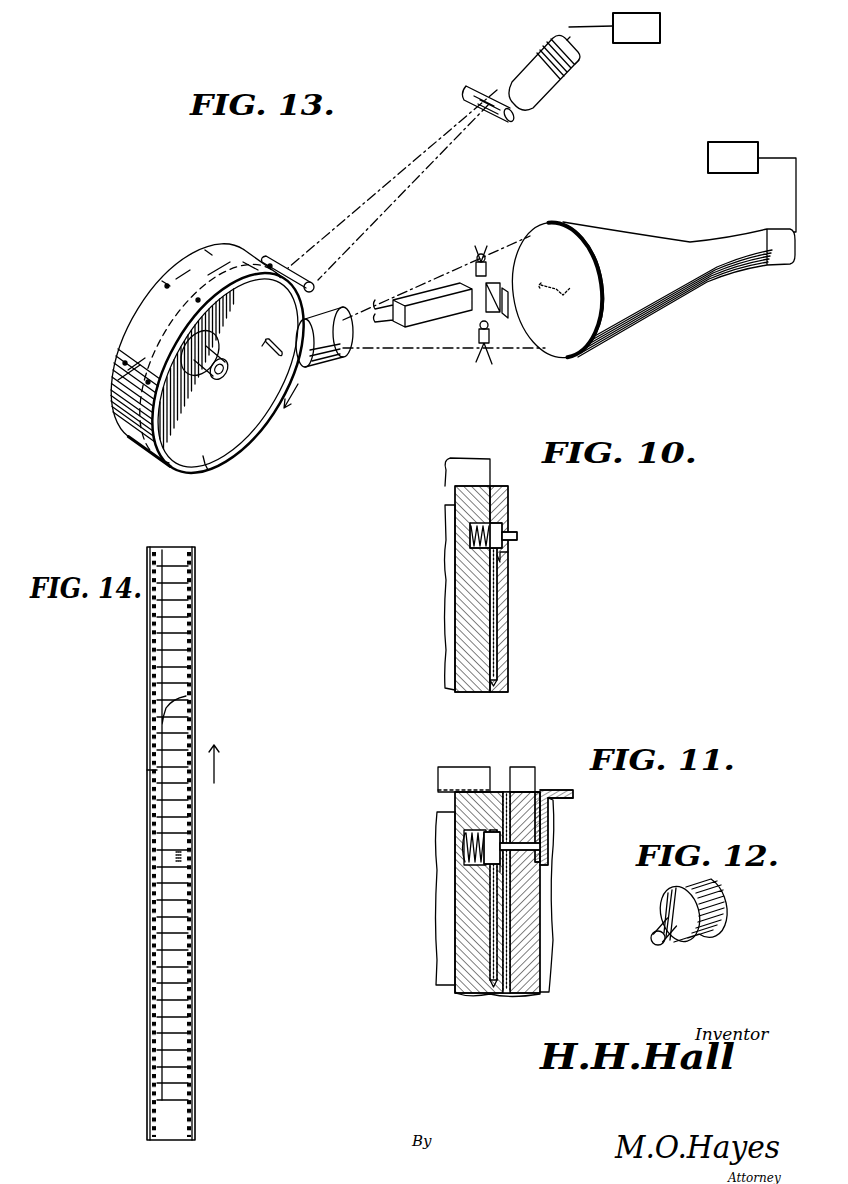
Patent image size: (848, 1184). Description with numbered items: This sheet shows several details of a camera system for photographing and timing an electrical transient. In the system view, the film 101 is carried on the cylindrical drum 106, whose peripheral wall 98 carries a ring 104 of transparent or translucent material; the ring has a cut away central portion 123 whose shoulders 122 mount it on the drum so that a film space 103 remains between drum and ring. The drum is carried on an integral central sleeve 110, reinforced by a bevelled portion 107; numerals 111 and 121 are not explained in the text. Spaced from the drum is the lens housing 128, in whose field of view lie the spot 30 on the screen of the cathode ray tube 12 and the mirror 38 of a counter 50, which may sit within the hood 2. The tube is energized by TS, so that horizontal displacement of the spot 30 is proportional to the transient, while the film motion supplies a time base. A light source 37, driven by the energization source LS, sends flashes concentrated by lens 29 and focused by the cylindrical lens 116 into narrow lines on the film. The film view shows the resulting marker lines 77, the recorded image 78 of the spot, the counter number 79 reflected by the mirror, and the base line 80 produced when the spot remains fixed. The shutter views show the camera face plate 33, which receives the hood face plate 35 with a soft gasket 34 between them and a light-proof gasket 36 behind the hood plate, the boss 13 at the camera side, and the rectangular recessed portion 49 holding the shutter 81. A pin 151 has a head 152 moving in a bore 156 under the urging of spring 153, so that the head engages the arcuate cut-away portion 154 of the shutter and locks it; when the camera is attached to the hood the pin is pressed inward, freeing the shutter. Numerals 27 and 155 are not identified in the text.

In FIG. 11, the hood 2 is at (565, 790).
In FIG. 13, the cathode ray tube 12 is at (645, 246).
In FIG. 10, the boss 13 is at (478, 462).
In FIG. 11, the boss 13 is at (448, 767).
In FIG. 11, the block 27 is at (523, 767).
In FIG. 13, the lens 29 is at (474, 96).
In FIG. 13, the spot 30 is at (570, 290).
In FIG. 10, the face plate 33 is at (505, 508).
In FIG. 11, the face plate 33 is at (505, 886).
In FIG. 11, the gasket 34 is at (505, 792).
In FIG. 11, the face plate 35 is at (560, 800).
In FIG. 11, the light-proof gasket 36 is at (538, 792).
In FIG. 13, the light source 37 is at (524, 62).
In FIG. 13, the mirror 38 is at (505, 318).
In FIG. 10, the rectangular recessed portion 49 is at (496, 636).
In FIG. 11, the rectangular recessed portion 49 is at (493, 902).
In FIG. 13, the counter 50 is at (440, 296).
In FIG. 14, the lines 77 is at (190, 645).
In FIG. 14, the image 78 is at (186, 700).
In FIG. 14, the number 79 is at (188, 858).
In FIG. 14, the base line 80 is at (147, 770).
In FIG. 10, the shutter 81 is at (498, 600).
In FIG. 11, the shutter 81 is at (493, 925).
In FIG. 13, the peripheral wall 98 is at (208, 470).
In FIG. 13, the film 101 is at (125, 345).
In FIG. 14, the film 101 is at (196, 578).
In FIG. 13, the film space 103 is at (253, 260).
In FIG. 13, the ring 104 is at (247, 432).
In FIG. 13, the drum 106 is at (170, 272).
In FIG. 13, the bevelled portion 107 is at (222, 348).
In FIG. 13, the sleeve 110 is at (223, 365).
In FIG. 13, the slot 111 is at (274, 351).
In FIG. 13, the cylindrical lens 116 is at (313, 291).
In FIG. 13, the marks 121 is at (197, 300).
In FIG. 13, the shoulders 122 is at (165, 288).
In FIG. 13, the cut away central portion 123 is at (211, 250).
In FIG. 13, the lens housing 128 is at (318, 330).
In FIG. 10, the pin 151 is at (518, 537).
In FIG. 11, the pin 151 is at (541, 848).
In FIG. 12, the pin 151 is at (659, 945).
In FIG. 10, the head 152 is at (503, 527).
In FIG. 11, the head 152 is at (484, 860).
In FIG. 12, the head 152 is at (722, 920).
In FIG. 10, the spring 153 is at (475, 538).
In FIG. 11, the spring 153 is at (470, 846).
In FIG. 10, the arcuate cut-away portion 154 is at (498, 560).
In FIG. 11, the arcuate cut-away portion 154 is at (503, 860).
In FIG. 10, the surface 155 is at (508, 556).
In FIG. 11, the surface 155 is at (492, 792).
In FIG. 10, the bore 156 is at (470, 520).
In FIG. 11, the bore 156 is at (470, 830).
In FIG. 13, the source of energization LS is at (636, 28).
In FIG. 13, the transient source TS is at (752, 187).